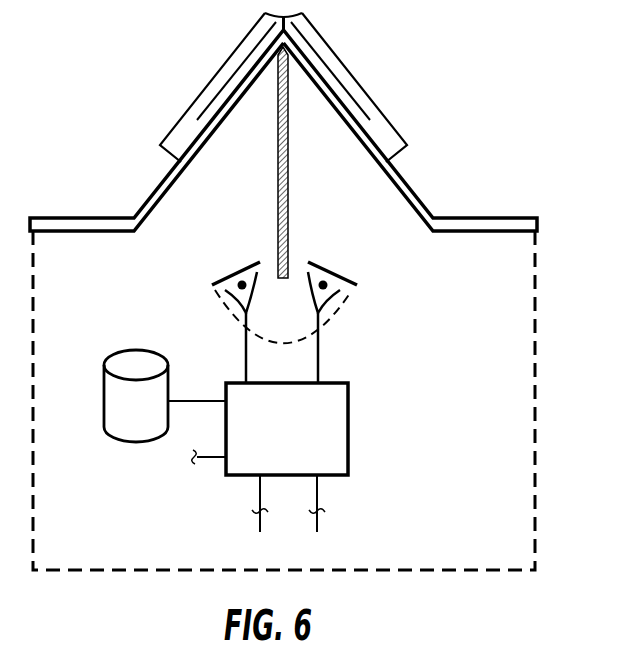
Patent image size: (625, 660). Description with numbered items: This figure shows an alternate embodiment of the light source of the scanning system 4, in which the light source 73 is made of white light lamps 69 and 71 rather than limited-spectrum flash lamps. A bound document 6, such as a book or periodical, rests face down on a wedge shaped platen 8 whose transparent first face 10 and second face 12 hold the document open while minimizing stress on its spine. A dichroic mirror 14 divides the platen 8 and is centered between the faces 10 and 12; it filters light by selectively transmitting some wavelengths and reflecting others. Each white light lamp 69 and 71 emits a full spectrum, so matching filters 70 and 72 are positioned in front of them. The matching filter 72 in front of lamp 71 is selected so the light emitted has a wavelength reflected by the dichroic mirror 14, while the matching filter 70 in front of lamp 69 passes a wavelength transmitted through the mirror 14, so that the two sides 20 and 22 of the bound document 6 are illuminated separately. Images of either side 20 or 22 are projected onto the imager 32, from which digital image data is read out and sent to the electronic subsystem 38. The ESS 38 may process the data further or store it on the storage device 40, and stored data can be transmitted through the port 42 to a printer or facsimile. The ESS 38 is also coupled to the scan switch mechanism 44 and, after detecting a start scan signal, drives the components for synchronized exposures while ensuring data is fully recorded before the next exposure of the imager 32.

The scanning system 4 is at (536, 392).
The bound document 6 is at (380, 38).
The wedge shaped platen 8 is at (243, 162).
The first face 10 is at (161, 183).
The second face 12 is at (399, 176).
The dichroic mirror 14 is at (278, 212).
The side of bound document 20 is at (201, 103).
The side of bound document 22 is at (371, 105).
The imager 32 is at (311, 516).
The electronic subsystem (ESS) 38 is at (348, 447).
The storage device 40 is at (140, 350).
The port 42 is at (192, 461).
The scan switch mechanism 44 is at (255, 516).
The white light lamp 69 is at (218, 292).
The matching filter 70 is at (237, 268).
The white light lamp 71 is at (346, 297).
The matching filter 72 is at (335, 268).
The light source 73 is at (302, 346).